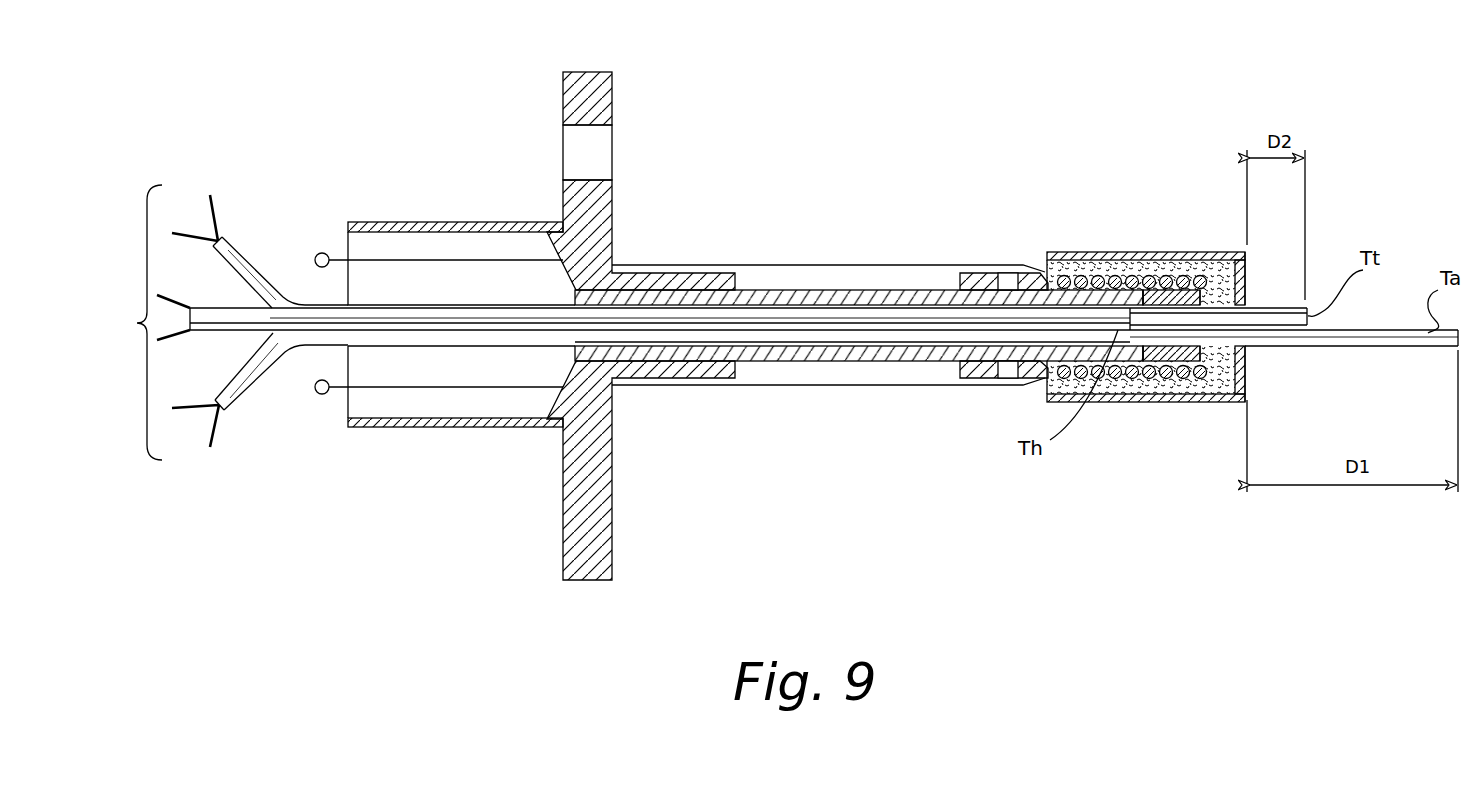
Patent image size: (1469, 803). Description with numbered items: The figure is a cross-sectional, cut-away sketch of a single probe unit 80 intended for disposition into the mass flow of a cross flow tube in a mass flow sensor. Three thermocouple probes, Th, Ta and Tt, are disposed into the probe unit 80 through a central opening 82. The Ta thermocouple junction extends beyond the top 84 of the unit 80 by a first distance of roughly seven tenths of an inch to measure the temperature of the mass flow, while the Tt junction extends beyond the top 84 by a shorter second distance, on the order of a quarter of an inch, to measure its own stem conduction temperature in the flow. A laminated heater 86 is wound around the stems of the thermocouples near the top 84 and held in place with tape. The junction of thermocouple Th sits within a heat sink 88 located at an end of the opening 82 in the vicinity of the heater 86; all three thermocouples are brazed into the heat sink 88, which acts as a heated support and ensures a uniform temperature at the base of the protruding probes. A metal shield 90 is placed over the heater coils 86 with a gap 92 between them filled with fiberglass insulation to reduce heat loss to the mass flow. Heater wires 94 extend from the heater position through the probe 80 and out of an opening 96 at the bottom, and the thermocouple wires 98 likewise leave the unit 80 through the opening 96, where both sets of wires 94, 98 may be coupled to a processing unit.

The single probe unit 80 is at (670, 505).
The central opening 82 is at (790, 348).
The top of the unit 84 is at (1250, 368).
The laminated heater 86 is at (1080, 271).
The heat sink 88 is at (1175, 265).
The metal shield 90 is at (1147, 394).
The gap 92 is at (1103, 253).
The heater wires 94 is at (463, 260).
The opening 96 is at (344, 404).
The thermocouple wires 98 is at (778, 322).